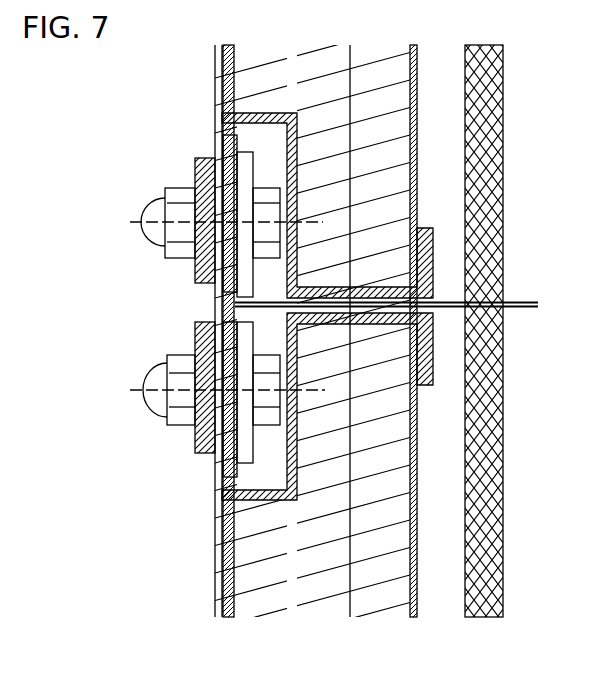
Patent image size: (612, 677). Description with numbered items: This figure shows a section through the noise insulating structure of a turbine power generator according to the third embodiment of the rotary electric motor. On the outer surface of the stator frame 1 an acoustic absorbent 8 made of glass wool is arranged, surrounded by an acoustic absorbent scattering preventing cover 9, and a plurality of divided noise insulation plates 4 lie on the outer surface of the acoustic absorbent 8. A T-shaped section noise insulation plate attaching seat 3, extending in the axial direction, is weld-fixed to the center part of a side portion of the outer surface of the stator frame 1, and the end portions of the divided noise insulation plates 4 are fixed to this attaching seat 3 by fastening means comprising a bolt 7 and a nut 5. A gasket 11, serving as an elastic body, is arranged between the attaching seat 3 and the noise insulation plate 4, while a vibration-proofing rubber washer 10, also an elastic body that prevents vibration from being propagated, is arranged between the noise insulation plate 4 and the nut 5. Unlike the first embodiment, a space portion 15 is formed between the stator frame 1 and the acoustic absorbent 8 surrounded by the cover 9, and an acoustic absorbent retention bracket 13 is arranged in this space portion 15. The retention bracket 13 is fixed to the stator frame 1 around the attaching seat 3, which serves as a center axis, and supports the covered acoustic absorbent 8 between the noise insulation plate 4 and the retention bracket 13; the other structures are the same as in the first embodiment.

The stator frame 1 is at (503, 388).
The T-shaped noise insulation plate attaching seat 3 is at (238, 310).
The noise insulation plate 4 is at (217, 571).
The nut 5 is at (162, 368).
The bolt 7 is at (272, 402).
The acoustic absorbent 8 is at (388, 80).
The acoustic absorbent scattering preventing cover 9 is at (420, 155).
The vibration-proofing rubber washer 10 is at (196, 343).
The gasket 11 is at (220, 467).
The acoustic absorbent retention bracket 13 is at (425, 247).
The space portion 15 is at (445, 200).